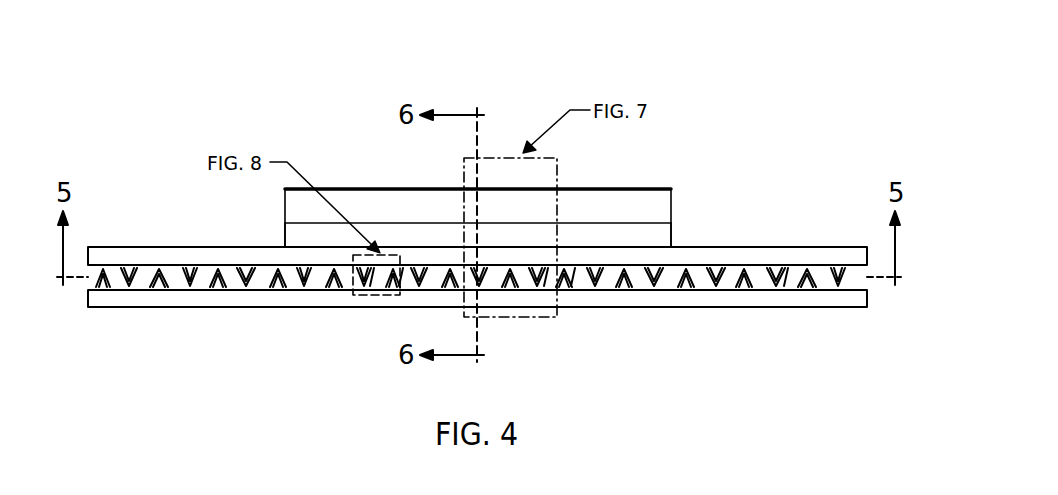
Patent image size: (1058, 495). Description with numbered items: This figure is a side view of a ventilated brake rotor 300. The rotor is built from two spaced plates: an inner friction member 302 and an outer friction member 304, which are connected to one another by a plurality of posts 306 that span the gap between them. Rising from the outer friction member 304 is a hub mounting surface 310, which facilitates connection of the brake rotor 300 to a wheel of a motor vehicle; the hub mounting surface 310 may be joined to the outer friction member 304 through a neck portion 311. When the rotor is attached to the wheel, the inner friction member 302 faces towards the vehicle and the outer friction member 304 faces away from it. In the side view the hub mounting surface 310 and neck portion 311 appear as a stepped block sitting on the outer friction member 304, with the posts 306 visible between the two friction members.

The ventilated brake rotor 300 is at (730, 98).
The inner friction member 302 is at (813, 298).
The outer friction member 304 is at (805, 253).
The posts 306 is at (725, 285).
The hub mounting surface 310 is at (623, 189).
The neck portion 311 is at (664, 211).